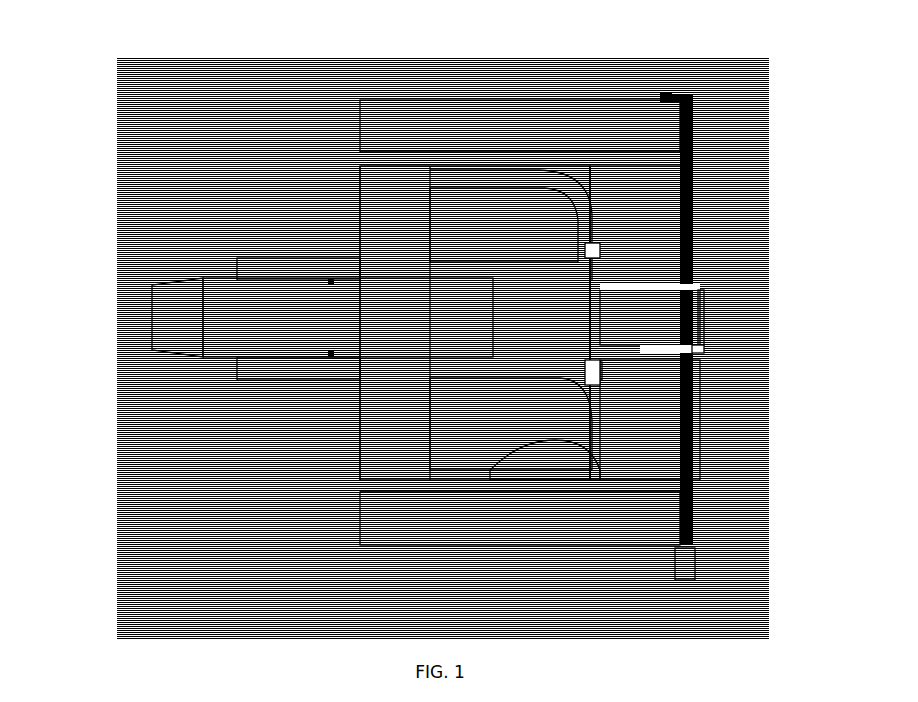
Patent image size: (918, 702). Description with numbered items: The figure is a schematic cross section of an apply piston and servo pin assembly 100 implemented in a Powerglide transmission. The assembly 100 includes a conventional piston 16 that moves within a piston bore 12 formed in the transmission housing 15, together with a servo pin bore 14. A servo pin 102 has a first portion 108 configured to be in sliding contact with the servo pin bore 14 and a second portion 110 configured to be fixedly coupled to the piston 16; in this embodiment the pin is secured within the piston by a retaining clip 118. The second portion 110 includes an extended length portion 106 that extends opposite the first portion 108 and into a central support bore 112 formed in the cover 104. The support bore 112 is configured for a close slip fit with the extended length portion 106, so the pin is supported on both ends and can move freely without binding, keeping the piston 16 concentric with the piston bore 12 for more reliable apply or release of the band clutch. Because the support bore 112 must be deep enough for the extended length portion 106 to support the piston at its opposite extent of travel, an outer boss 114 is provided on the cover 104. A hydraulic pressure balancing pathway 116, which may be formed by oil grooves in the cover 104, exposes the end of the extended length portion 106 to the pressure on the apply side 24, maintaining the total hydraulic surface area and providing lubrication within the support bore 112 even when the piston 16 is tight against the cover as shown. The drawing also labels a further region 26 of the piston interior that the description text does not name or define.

The apply piston and servo pin assembly 100 is at (752, 118).
The transmission housing 15 is at (356, 128).
The apply side 24 is at (547, 152).
The piston bore 12 is at (445, 493).
The inner chamber 26 is at (478, 420).
The piston 16 is at (522, 456).
The first portion 108 is at (222, 318).
The servo pin 102 is at (152, 285).
The servo pin bore 14 is at (240, 362).
The extended length portion 106 is at (646, 314).
The retaining clip 118 is at (592, 290).
The outer boss 114 is at (717, 293).
The central support bore 112 is at (704, 337).
The hydraulic pressure balancing pathway 116 is at (598, 373).
The cover 104 is at (671, 411).
The second portion 110 is at (600, 372).